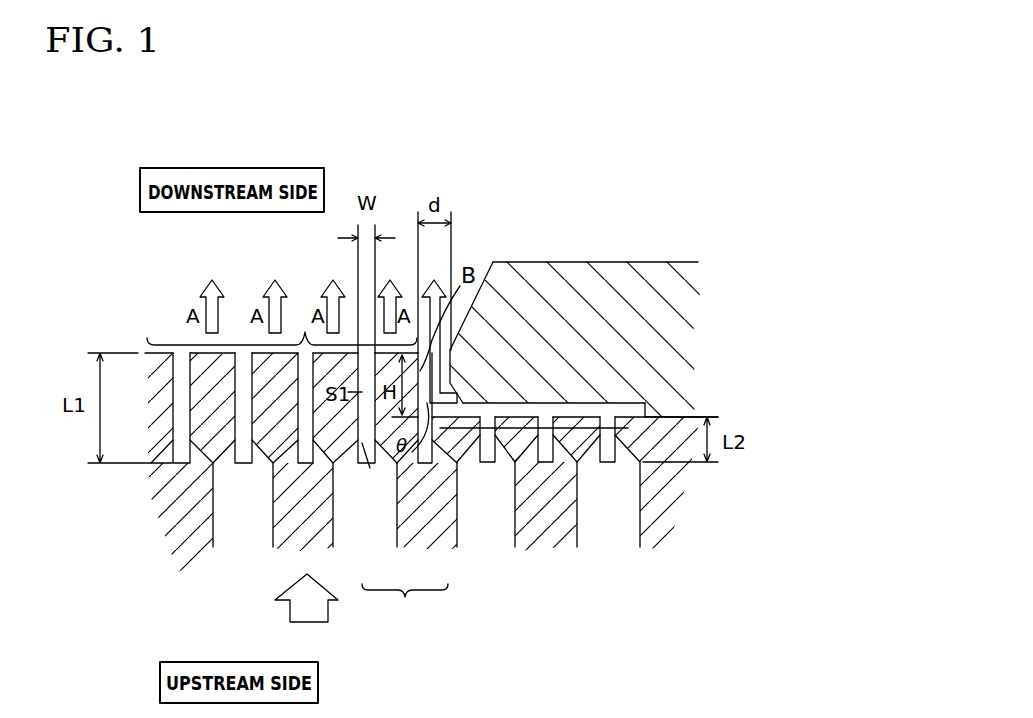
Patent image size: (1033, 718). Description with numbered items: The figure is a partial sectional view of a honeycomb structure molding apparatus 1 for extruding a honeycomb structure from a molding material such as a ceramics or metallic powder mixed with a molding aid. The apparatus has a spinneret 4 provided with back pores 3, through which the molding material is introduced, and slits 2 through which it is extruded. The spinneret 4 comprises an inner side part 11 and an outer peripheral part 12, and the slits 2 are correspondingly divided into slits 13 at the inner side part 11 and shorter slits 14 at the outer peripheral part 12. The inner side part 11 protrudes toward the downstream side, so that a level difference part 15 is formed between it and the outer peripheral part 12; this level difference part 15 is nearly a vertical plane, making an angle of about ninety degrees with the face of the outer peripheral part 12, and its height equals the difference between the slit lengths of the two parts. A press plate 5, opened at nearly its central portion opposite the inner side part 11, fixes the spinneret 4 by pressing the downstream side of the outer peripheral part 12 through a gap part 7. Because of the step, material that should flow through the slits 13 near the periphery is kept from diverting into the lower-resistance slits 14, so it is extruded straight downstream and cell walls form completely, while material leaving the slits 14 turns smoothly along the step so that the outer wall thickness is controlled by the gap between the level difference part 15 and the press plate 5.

The honeycomb structure molding apparatus 1 is at (660, 230).
The slits 2 is at (405, 606).
The back pores 3 is at (609, 513).
The spinneret 4 is at (675, 515).
The press plate 5 is at (678, 360).
The gap part 7 is at (492, 403).
The inner side part 11 is at (305, 333).
The outer peripheral part 12 is at (560, 433).
The slits 13 is at (309, 437).
The slits 14 is at (495, 432).
The level difference part 15 is at (450, 350).